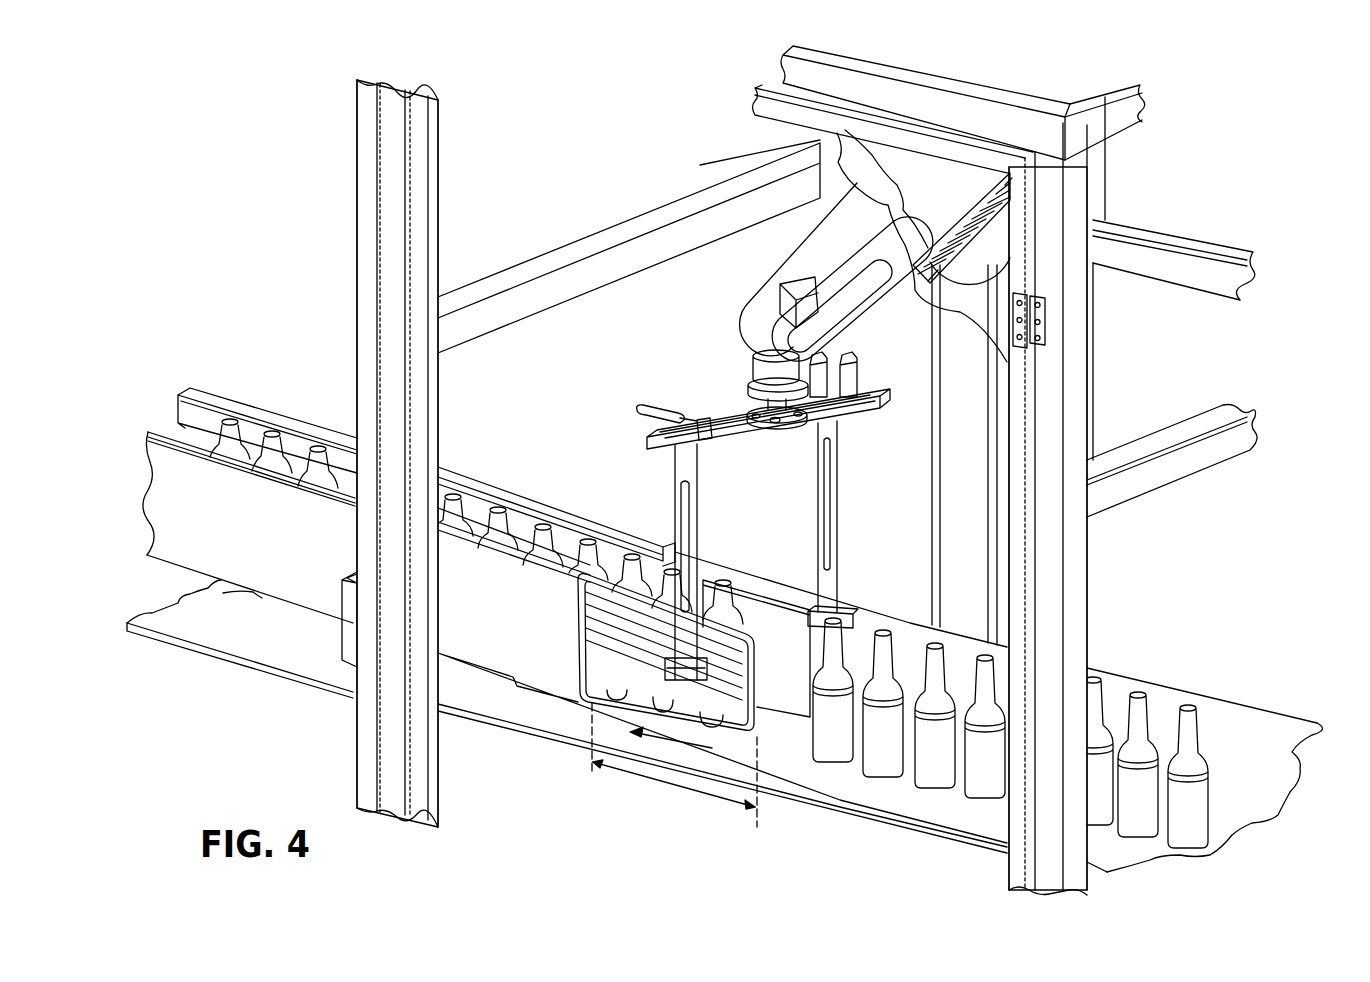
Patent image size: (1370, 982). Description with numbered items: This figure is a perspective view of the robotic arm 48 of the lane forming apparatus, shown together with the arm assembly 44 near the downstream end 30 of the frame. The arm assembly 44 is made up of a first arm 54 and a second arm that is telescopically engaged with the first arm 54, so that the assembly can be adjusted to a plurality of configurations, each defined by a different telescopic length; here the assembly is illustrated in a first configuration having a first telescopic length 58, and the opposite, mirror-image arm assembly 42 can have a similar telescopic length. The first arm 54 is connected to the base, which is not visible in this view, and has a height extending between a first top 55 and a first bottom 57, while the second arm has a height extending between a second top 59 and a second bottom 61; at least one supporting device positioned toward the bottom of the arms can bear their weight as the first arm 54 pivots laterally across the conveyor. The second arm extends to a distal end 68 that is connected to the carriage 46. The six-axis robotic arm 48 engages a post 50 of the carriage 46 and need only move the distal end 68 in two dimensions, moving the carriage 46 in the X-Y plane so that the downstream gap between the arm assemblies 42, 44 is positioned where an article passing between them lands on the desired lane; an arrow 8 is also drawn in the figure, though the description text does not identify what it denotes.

The downstream end 30 is at (1128, 120).
The arm assembly 42 is at (540, 494).
The arm assembly 44 is at (300, 615).
The carriage 46 is at (722, 452).
The robotic arm 48 is at (852, 312).
The post 50 is at (772, 403).
The first arm 54 is at (498, 665).
The first top 55 is at (305, 422).
The first bottom 57 is at (250, 594).
The first telescopic length 58 is at (657, 773).
The second top 59 is at (755, 592).
The second bottom 61 is at (760, 745).
The distal end 68 is at (760, 720).
The direction of travel arrow 8 is at (680, 748).